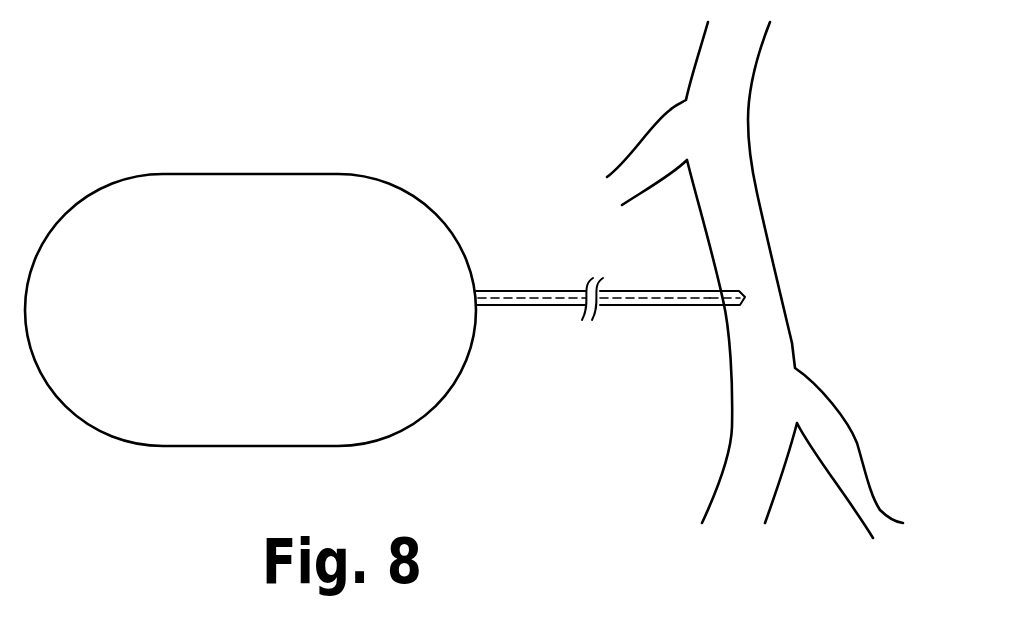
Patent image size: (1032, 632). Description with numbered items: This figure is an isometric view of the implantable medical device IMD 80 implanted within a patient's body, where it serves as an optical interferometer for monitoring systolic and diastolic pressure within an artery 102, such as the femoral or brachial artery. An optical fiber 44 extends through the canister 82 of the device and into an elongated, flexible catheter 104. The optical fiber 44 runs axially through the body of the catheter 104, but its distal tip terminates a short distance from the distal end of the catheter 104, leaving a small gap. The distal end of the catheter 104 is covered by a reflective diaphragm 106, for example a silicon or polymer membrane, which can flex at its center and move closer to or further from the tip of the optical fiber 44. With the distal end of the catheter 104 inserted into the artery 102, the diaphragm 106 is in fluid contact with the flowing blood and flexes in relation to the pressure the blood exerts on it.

The IMD 80 is at (158, 140).
The canister 82 is at (277, 308).
The optical fiber 44 is at (654, 296).
The catheter 104 is at (502, 305).
The artery 102 is at (733, 207).
The reflective diaphragm 106 is at (746, 297).